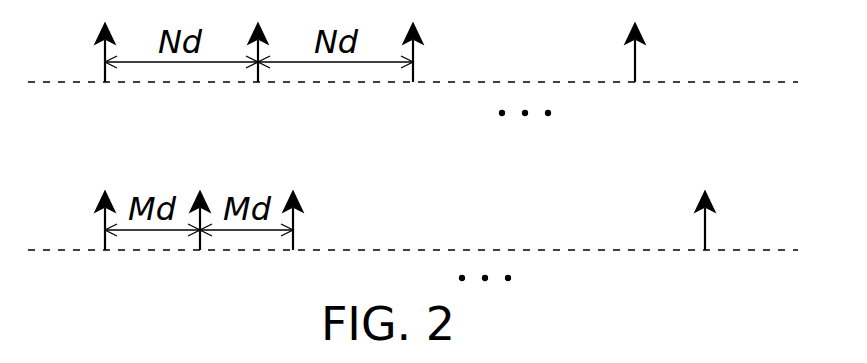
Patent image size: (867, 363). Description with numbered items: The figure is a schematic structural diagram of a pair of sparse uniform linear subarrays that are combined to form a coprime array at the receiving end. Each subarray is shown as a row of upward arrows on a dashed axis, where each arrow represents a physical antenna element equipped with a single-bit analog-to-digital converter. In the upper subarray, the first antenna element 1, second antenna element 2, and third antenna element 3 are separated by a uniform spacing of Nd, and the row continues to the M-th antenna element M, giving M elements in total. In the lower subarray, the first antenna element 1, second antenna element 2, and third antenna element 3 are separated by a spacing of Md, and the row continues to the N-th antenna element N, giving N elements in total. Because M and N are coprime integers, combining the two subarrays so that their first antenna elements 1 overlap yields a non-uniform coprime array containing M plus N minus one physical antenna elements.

The first antenna element 1 is at (105, 163).
The second antenna element 2 is at (229, 163).
The third antenna element 3 is at (353, 163).
The M-th antenna element M is at (634, 78).
The N-th antenna element N is at (704, 247).